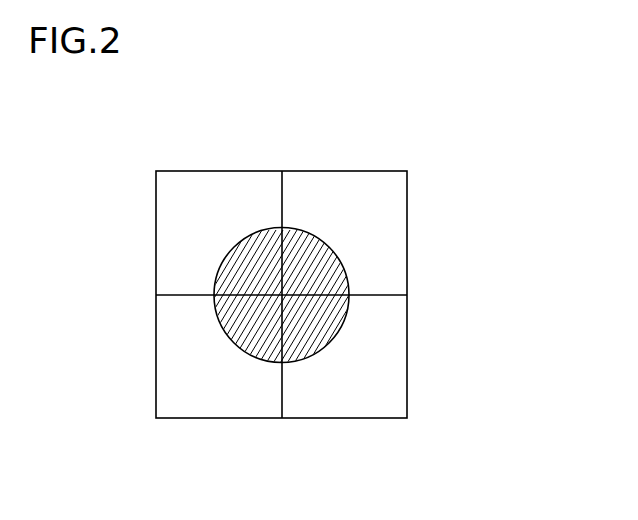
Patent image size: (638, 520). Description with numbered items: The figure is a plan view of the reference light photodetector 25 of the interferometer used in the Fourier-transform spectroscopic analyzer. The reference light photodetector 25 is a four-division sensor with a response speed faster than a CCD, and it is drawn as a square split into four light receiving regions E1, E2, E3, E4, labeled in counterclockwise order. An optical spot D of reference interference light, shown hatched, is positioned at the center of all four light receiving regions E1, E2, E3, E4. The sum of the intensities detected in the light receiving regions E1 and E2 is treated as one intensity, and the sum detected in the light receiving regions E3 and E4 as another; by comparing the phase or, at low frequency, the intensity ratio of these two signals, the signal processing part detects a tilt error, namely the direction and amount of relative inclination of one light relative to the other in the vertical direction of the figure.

The reference light photodetector 25 is at (464, 174).
The light receiving region E1 is at (346, 194).
The light receiving region E2 is at (216, 194).
The light receiving region E3 is at (214, 400).
The light receiving region E4 is at (346, 400).
The optical spot D is at (333, 340).